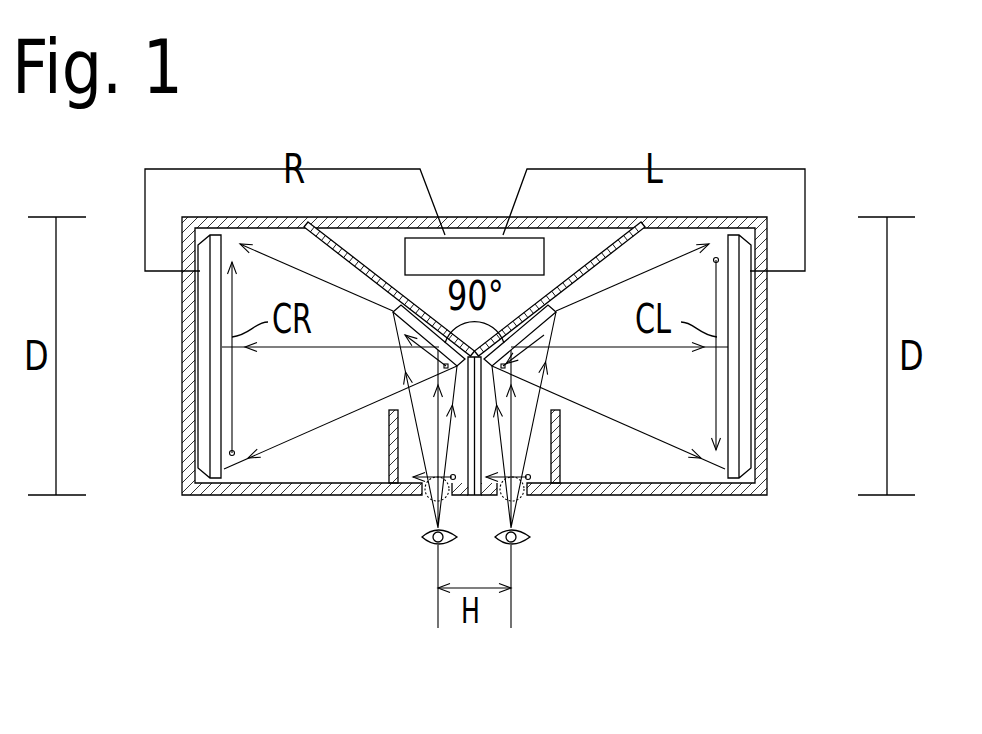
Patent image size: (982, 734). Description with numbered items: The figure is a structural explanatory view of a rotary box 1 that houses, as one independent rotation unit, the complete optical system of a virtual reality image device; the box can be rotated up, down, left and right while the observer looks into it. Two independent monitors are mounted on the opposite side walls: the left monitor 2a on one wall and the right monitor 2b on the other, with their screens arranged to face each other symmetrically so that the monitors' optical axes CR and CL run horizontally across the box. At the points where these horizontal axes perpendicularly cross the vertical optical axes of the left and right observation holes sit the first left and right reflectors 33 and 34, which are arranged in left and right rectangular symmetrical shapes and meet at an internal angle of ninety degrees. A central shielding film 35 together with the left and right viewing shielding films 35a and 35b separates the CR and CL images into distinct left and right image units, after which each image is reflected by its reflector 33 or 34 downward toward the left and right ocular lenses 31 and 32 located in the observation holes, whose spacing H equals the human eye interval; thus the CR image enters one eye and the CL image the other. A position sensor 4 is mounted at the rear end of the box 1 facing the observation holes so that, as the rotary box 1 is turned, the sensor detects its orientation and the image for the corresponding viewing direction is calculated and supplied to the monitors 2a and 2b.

The rotary box 1 is at (712, 218).
The left monitor 2a is at (206, 373).
The right monitor 2b is at (744, 373).
The position sensor 4 is at (478, 250).
The first left reflector 33 is at (405, 317).
The first right reflector 34 is at (544, 317).
The shielding film 35 is at (483, 458).
The left viewing shielding film 35a is at (392, 460).
The right viewing shielding film 35b is at (561, 452).
The left eye ocular lens 31 is at (426, 514).
The right eye ocular lens 32 is at (523, 514).